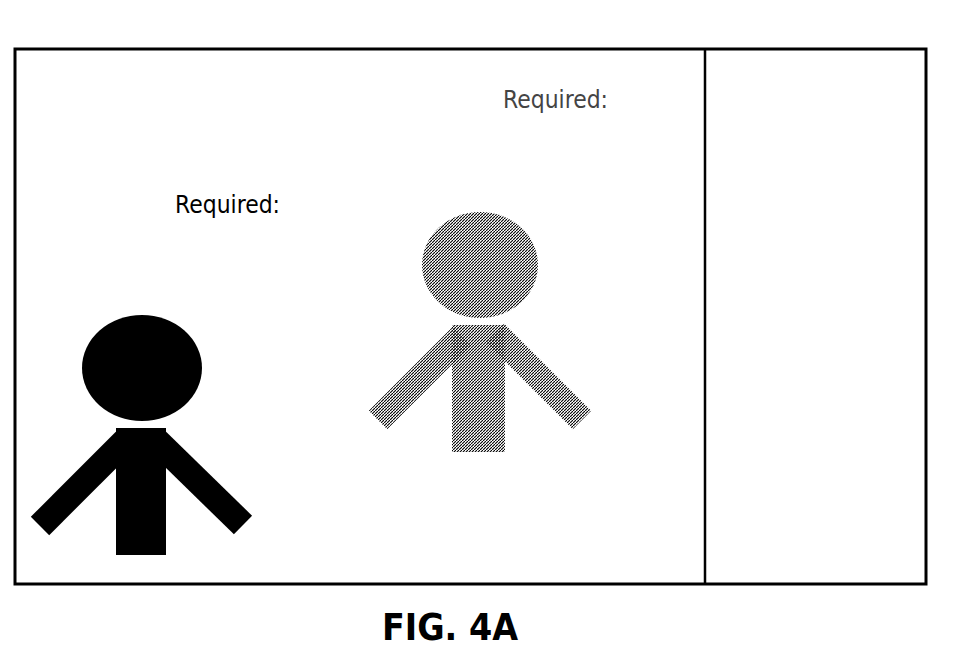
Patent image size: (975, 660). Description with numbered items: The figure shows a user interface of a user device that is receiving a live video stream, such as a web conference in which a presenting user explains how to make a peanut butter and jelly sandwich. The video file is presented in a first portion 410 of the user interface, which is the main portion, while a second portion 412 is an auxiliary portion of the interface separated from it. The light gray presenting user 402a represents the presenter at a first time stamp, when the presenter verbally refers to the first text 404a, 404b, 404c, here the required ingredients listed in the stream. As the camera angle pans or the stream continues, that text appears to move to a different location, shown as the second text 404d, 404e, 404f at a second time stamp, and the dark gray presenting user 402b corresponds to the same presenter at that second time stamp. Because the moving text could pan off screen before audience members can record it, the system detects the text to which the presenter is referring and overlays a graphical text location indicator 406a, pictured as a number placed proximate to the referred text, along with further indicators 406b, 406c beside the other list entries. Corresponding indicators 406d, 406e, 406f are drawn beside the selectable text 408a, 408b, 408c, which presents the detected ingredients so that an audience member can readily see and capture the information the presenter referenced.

The light gray presenting user 402a is at (547, 330).
The dark gray presenting user 402b is at (215, 425).
The first text 404a is at (487, 132).
The first text 404b is at (487, 167).
The first text 404c is at (487, 200).
The second text 404d is at (292, 230).
The second text 404e is at (347, 233).
The second text 404f is at (278, 295).
The graphical text location indicator 406a is at (140, 232).
The second sequence number of active list 406b is at (140, 267).
The third sequence number of active list 406c is at (140, 300).
The first sequence number of shared list 406d is at (723, 92).
The second sequence number of shared list 406e is at (722, 118).
The third sequence number of shared list 406f is at (722, 153).
The first shared list item (bread) 408a is at (787, 85).
The second shared list item (peanut butter) 408b is at (842, 110).
The third shared list item (jelly) 408c is at (812, 165).
The first portion of the user interface 410 is at (168, 83).
The second portion of the user interface 412 is at (775, 560).